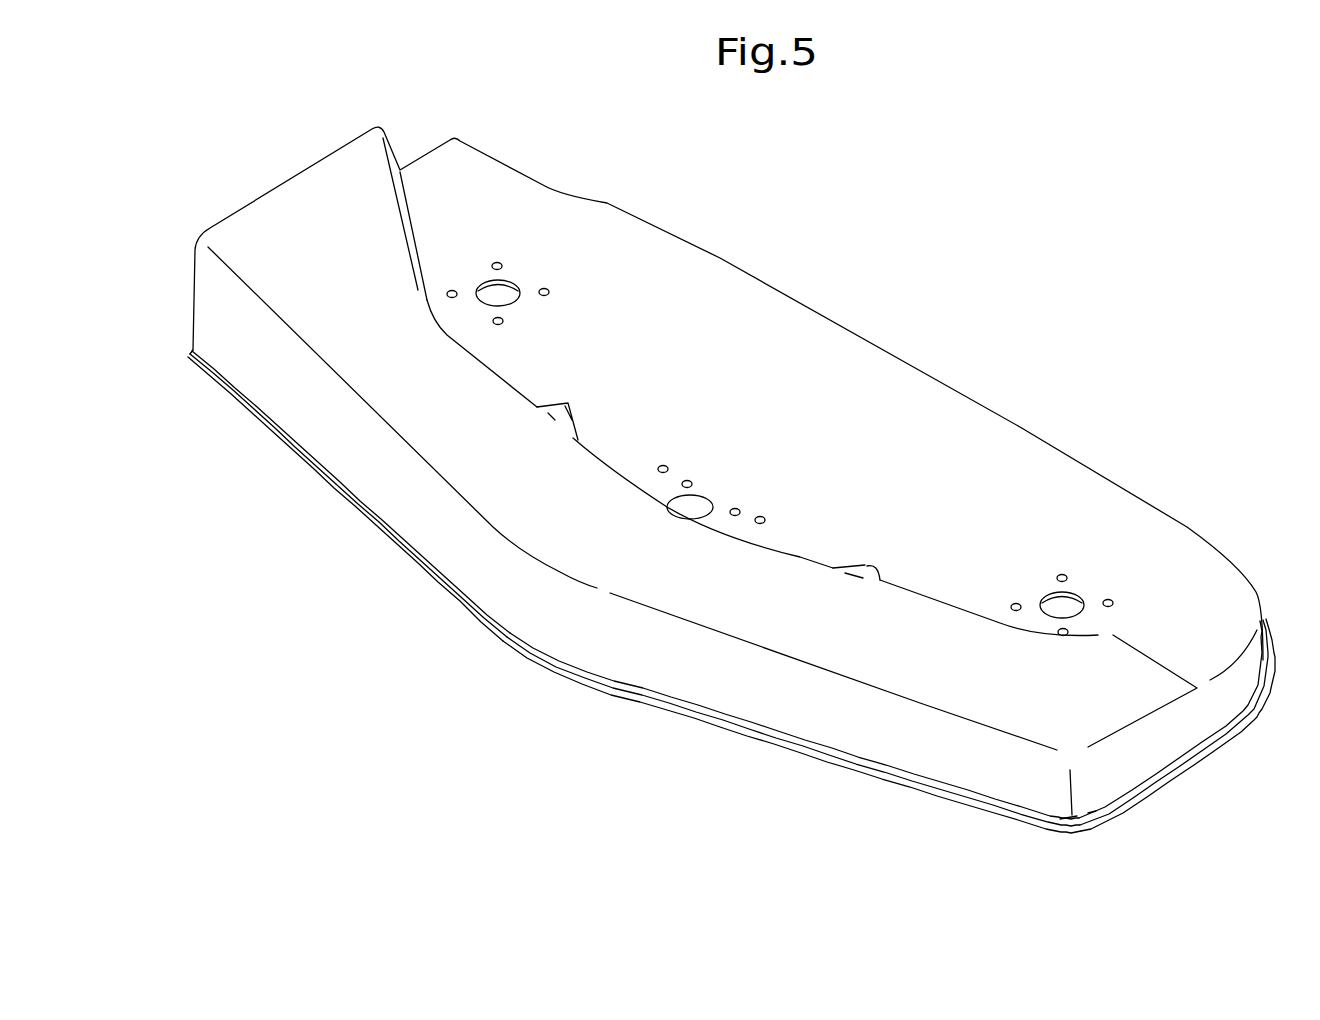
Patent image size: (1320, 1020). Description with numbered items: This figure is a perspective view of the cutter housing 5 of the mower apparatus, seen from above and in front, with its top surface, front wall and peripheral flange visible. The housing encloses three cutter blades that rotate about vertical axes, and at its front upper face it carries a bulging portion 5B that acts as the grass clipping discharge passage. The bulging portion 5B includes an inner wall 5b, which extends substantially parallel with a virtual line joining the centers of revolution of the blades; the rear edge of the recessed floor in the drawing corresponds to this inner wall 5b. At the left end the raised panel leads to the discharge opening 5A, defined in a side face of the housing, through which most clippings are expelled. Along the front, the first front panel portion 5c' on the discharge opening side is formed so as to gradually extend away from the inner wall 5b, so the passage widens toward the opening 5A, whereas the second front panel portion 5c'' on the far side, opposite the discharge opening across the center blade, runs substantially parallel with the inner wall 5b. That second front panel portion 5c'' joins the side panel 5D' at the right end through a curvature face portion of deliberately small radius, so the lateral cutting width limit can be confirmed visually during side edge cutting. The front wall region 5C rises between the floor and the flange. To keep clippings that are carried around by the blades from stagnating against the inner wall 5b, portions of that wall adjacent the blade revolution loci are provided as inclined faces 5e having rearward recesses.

The cutter housing 5 is at (410, 612).
The discharge opening 5A is at (232, 210).
The bulging portion 5B is at (485, 460).
The side wall 5C is at (695, 677).
The side panel 5D' is at (1177, 725).
The inner wall 5b is at (505, 377).
The first front panel portion 5c' is at (335, 496).
The second front panel portion 5c'' is at (792, 738).
The inclined face 5e is at (563, 407).